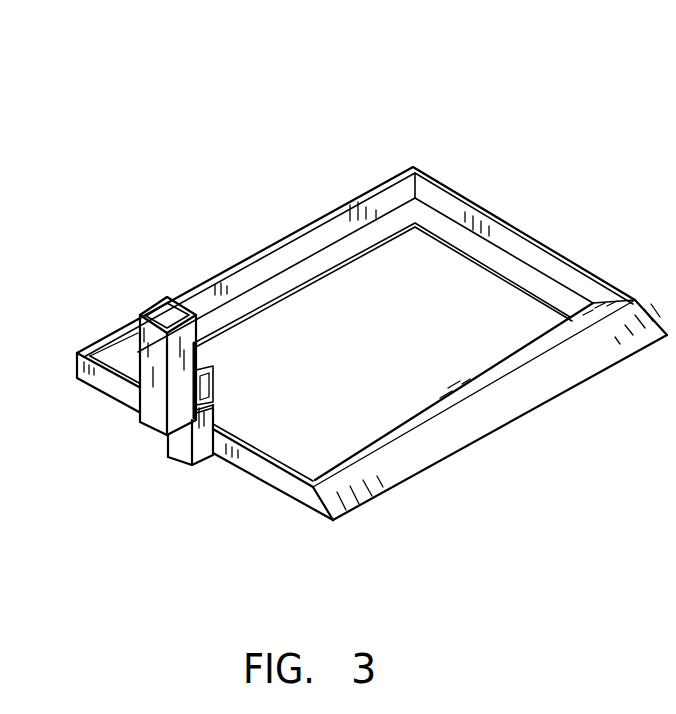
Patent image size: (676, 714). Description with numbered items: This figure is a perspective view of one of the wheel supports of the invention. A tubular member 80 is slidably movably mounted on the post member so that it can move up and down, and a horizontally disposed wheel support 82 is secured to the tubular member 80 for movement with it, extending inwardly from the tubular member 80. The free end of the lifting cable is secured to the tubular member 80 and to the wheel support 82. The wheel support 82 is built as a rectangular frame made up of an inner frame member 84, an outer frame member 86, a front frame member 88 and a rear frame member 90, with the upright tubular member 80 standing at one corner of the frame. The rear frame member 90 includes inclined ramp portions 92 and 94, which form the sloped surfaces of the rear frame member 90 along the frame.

The tubular member 80 is at (155, 405).
The wheel support 82 is at (456, 166).
The inner frame member 84 is at (262, 460).
The outer frame member 86 is at (517, 247).
The front frame member 88 is at (290, 236).
The rear frame member 90 is at (432, 458).
The inclined ramp portion 92 is at (502, 413).
The inclined ramp portion 94 is at (495, 372).